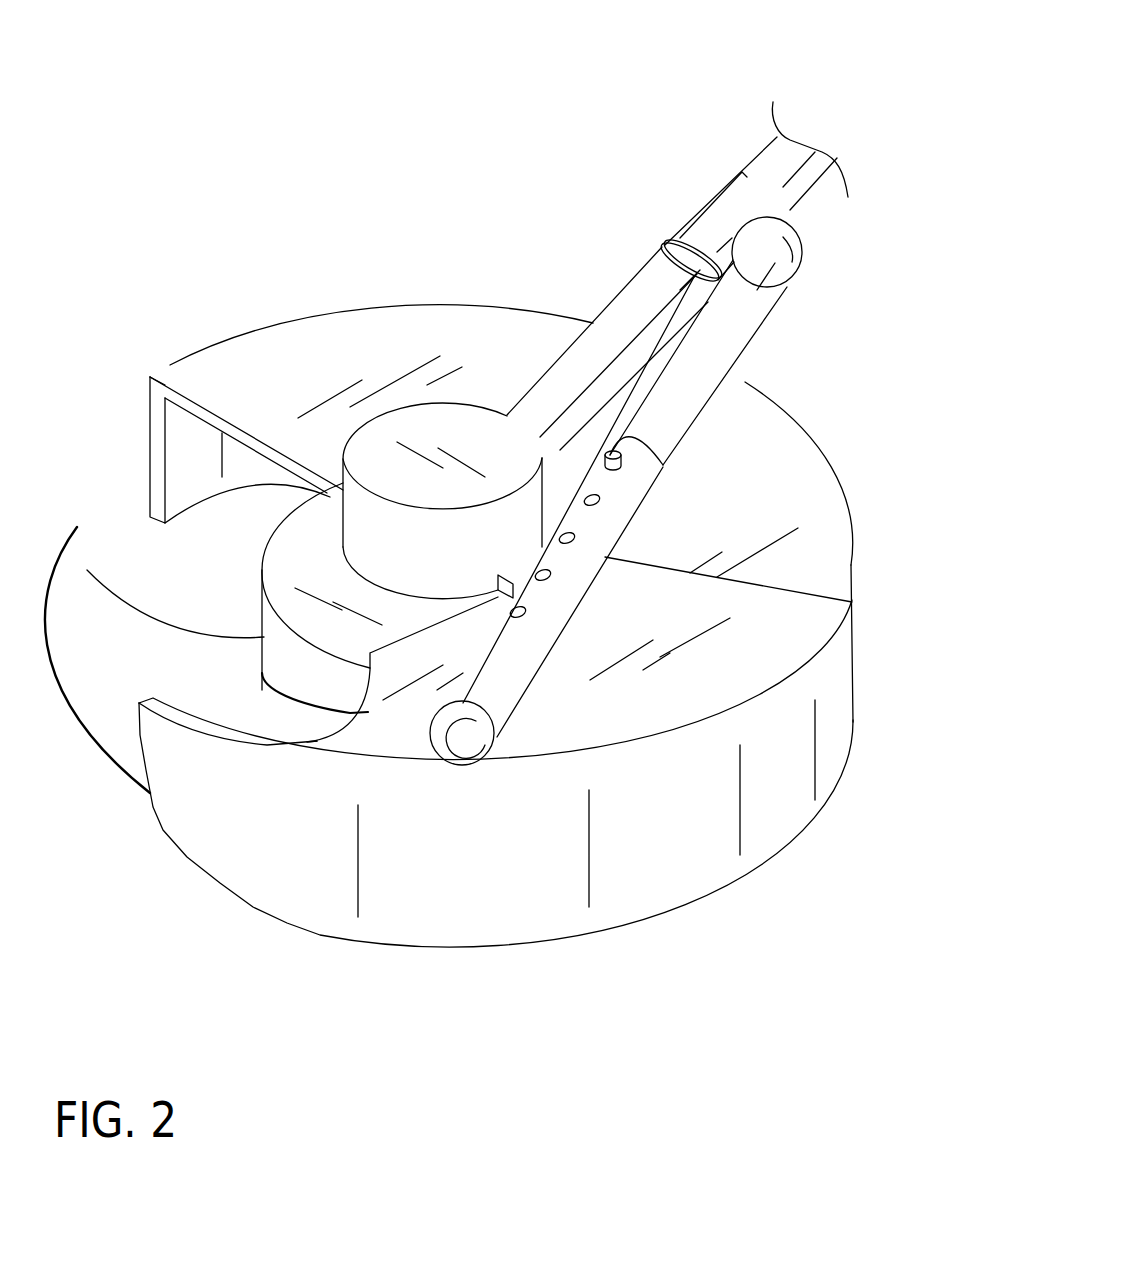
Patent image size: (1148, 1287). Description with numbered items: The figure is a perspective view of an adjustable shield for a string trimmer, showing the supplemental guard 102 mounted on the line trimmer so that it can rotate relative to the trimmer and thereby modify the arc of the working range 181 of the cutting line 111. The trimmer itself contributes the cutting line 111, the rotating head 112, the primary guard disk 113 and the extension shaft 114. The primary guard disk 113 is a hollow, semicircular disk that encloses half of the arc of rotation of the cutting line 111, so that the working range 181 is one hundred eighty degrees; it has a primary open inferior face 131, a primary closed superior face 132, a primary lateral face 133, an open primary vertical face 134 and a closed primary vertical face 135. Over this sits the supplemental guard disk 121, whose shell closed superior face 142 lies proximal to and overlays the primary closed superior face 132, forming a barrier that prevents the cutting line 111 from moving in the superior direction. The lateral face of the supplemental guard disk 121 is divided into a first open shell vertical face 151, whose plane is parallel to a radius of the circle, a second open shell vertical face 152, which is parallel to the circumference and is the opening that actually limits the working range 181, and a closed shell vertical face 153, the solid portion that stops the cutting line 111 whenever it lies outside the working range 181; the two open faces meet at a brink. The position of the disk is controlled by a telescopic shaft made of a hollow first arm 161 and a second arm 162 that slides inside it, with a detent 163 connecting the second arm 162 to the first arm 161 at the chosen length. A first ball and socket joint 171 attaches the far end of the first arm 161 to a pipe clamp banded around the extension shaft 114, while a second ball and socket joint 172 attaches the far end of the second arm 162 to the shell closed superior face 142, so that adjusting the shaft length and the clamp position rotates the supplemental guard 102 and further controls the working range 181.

The supplemental guard 102 is at (473, 985).
The cutting line 111 is at (167, 620).
The rotating head 112 is at (450, 423).
The primary guard disk 113 is at (803, 425).
The extension shaft 114 is at (783, 155).
The supplemental guard disk 121 is at (590, 931).
The primary open inferior face 131 is at (200, 505).
The primary closed superior face 132 is at (320, 337).
The primary lateral face 133 is at (853, 583).
The open primary vertical face 134 is at (175, 378).
The closed primary vertical face 135 is at (190, 447).
The shell closed superior face 142 is at (768, 635).
The first open shell vertical face 151 is at (705, 575).
The second open shell vertical face 152 is at (268, 674).
The closed shell vertical face 153 is at (780, 828).
The first arm 161 is at (697, 400).
The second arm 162 is at (632, 524).
The detent 163 is at (624, 460).
The first ball and socket joint 171 is at (797, 260).
The second ball and socket joint 172 is at (493, 743).
The working range 181 is at (150, 447).